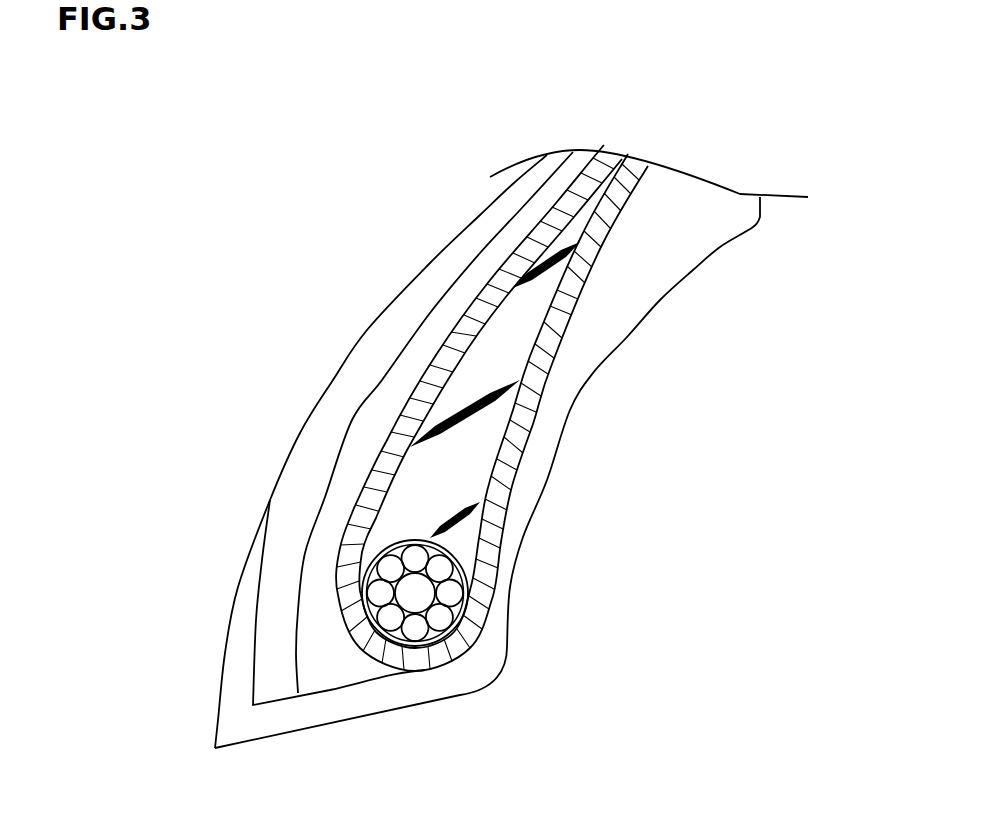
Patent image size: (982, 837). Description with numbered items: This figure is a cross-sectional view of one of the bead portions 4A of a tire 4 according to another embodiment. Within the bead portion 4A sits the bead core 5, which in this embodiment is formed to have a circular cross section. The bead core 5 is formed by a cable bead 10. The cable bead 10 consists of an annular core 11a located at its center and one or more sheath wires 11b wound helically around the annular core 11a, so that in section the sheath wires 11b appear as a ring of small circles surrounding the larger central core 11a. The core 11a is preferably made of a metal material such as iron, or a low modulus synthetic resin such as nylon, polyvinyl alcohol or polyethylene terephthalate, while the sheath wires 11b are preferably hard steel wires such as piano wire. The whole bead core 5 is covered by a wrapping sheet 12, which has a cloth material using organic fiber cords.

The tire 4 is at (698, 362).
The bead portion 4A is at (210, 603).
The bead core 5 is at (492, 408).
The cable bead 10 is at (500, 603).
The wrapping sheet 12 is at (373, 570).
The annular core 11a is at (417, 592).
The sheath wires 11b is at (390, 618).